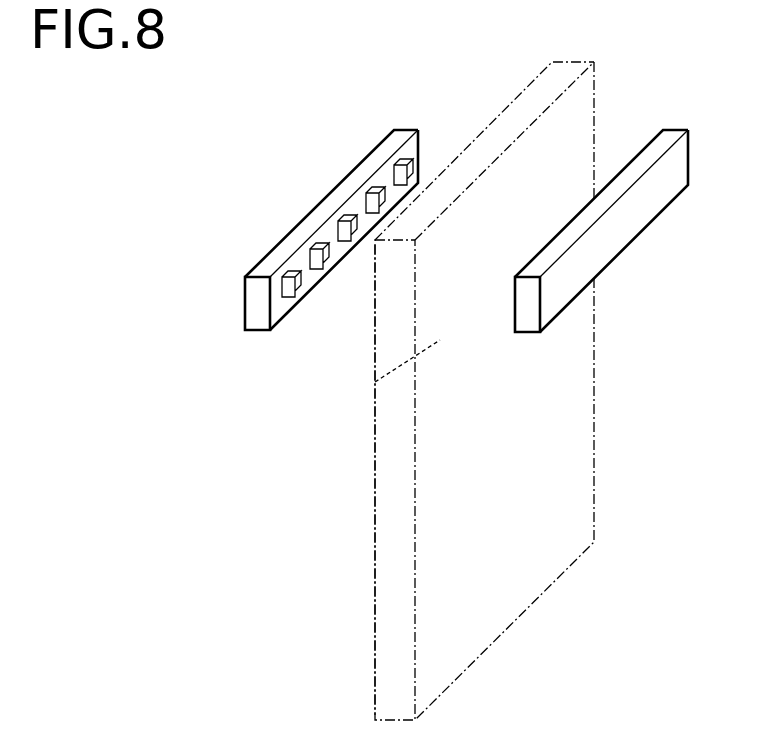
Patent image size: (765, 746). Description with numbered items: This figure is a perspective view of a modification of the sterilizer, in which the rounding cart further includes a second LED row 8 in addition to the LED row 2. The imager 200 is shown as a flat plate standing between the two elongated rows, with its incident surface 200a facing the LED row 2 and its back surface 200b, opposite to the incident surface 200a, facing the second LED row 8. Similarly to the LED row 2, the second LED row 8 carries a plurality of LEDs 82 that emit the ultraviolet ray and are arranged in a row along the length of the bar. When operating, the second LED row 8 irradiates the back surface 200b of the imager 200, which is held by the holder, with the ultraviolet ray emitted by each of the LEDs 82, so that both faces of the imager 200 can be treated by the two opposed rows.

The second LED row 8 is at (325, 219).
The LEDs 82 is at (405, 161).
The imager 200 is at (478, 391).
The incident surface 200a is at (553, 409).
The back surface 200b is at (375, 382).
The LED row 2 is at (632, 218).